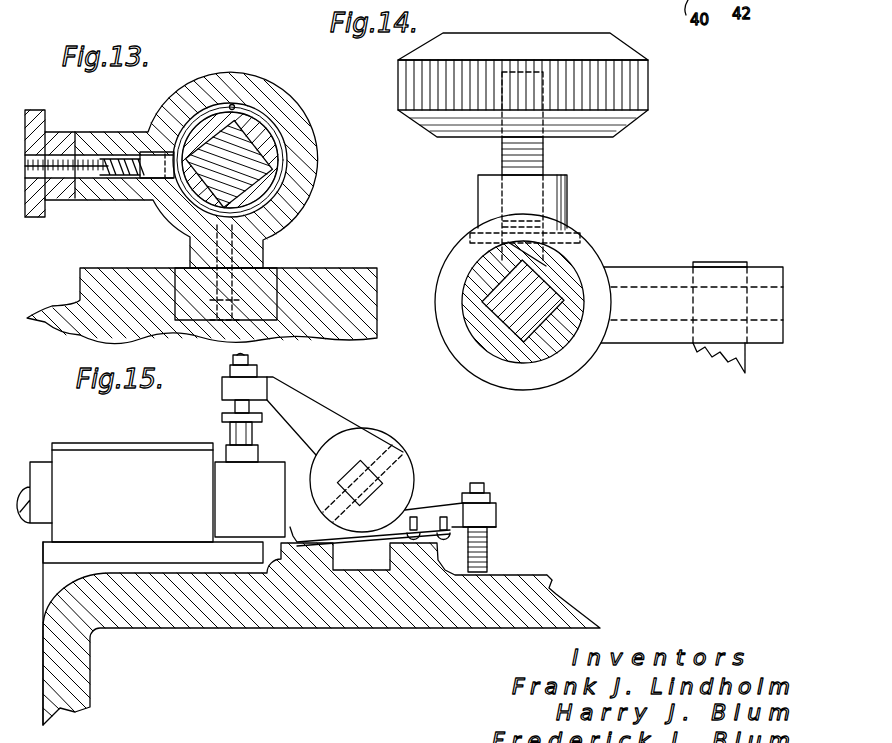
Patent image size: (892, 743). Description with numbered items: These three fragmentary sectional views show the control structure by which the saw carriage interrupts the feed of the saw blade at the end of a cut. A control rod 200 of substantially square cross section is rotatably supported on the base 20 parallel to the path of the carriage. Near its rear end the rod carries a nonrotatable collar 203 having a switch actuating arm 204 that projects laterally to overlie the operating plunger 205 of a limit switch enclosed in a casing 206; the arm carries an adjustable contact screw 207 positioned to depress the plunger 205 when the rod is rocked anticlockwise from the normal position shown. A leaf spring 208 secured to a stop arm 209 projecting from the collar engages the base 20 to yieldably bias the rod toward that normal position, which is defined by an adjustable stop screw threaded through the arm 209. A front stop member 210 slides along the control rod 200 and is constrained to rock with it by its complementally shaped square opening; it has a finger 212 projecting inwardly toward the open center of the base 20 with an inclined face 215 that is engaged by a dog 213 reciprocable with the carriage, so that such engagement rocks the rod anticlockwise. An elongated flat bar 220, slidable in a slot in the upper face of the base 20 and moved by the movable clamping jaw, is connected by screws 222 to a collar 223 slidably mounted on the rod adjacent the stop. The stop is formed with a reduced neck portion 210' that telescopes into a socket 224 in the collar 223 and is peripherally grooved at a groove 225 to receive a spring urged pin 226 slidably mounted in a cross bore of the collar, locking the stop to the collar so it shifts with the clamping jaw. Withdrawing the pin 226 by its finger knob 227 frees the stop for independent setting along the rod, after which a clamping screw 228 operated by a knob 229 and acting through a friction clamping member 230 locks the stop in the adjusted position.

In FIG. 15, the base 20 is at (138, 608).
In FIG. 13, the control rod 200 is at (266, 181).
In FIG. 14, the control rod 200 is at (548, 346).
In FIG. 15, the control rod 200 is at (381, 488).
In FIG. 15, the collar 203 is at (373, 447).
In FIG. 15, the switch actuating arm 204 is at (228, 388).
In FIG. 15, the operating plunger 205 is at (232, 430).
In FIG. 15, the casing 206 is at (88, 465).
In FIG. 15, the screw 207 is at (224, 413).
In FIG. 15, the leaf spring 208 is at (343, 537).
In FIG. 15, the stop arm 209 is at (496, 515).
In FIG. 14, the front stop member 210 is at (537, 282).
In FIG. 13, the neck portion 210' is at (199, 170).
In FIG. 14, the neck portion 210' is at (523, 331).
In FIG. 14, the finger 212 is at (767, 272).
In FIG. 14, the dog 213 is at (745, 357).
In FIG. 14, the inclined face 215 is at (667, 270).
In FIG. 13, the elongated flat bar 220 is at (277, 270).
In FIG. 13, the screws 222 is at (215, 257).
In FIG. 13, the collar 223 is at (277, 100).
In FIG. 13, the socket 224 is at (236, 105).
In FIG. 13, the groove 225 is at (264, 143).
In FIG. 13, the spring urged pin 226 is at (150, 158).
In FIG. 13, the finger knob 227 is at (40, 110).
In FIG. 14, the clamping screw 228 is at (545, 167).
In FIG. 14, the knob 229 is at (627, 52).
In FIG. 14, the friction clamping member 230 is at (566, 256).